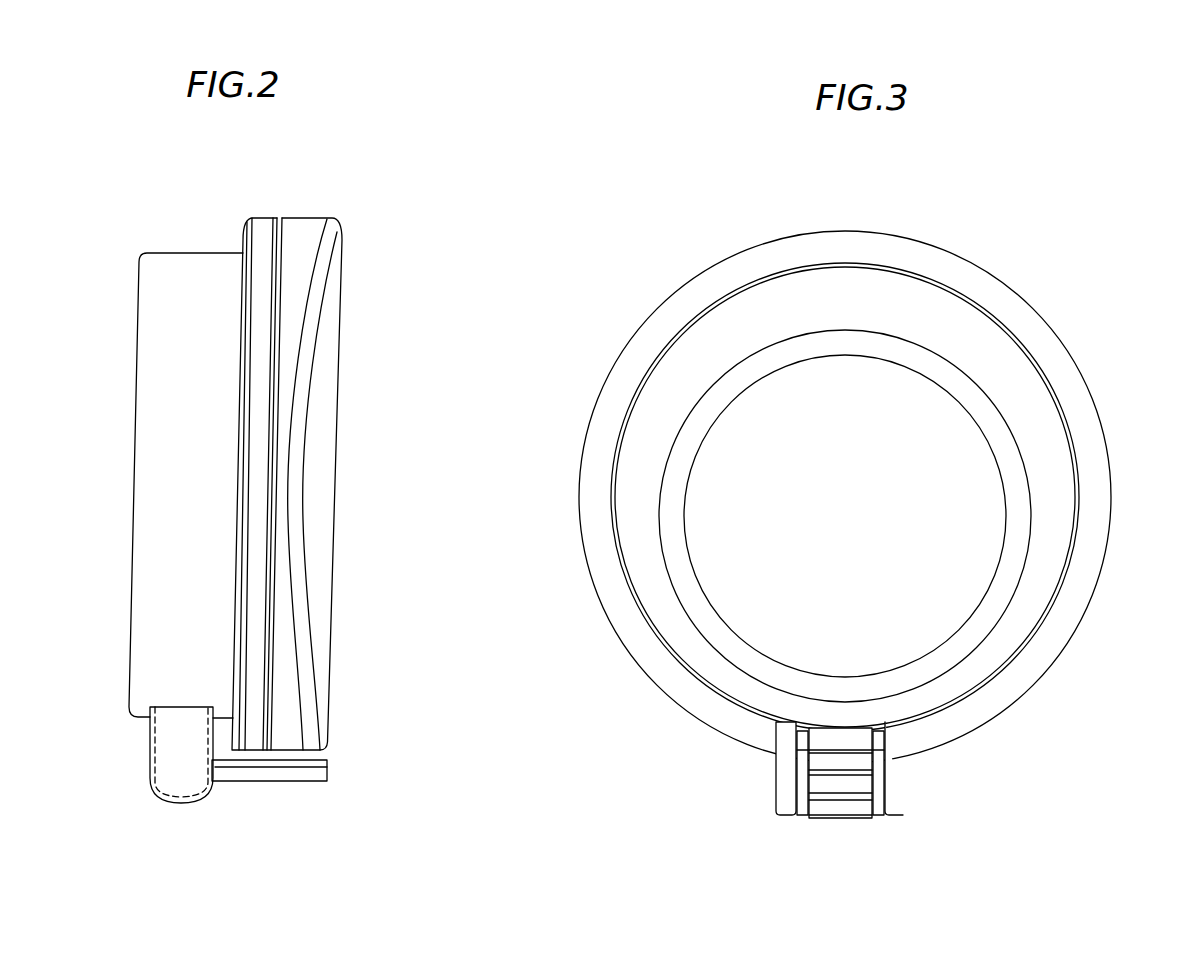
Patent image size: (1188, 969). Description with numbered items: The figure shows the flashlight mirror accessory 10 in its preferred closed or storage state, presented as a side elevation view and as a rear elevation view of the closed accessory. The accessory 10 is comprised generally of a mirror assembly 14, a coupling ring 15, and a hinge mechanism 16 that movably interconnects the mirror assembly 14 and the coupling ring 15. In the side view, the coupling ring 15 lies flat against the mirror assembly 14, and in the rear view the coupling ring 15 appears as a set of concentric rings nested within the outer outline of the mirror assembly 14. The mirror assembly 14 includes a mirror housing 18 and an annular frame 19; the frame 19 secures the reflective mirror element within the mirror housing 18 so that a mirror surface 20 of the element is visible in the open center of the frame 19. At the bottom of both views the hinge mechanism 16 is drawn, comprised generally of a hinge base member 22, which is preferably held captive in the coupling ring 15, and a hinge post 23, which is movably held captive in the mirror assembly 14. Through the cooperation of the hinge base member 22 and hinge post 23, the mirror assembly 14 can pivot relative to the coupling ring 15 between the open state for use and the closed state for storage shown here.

In FIG. 2, the flashlight mirror accessory 10 is at (190, 192).
In FIG. 3, the flashlight mirror accessory 10 is at (722, 227).
In FIG. 2, the mirror assembly 14 is at (298, 200).
In FIG. 3, the mirror assembly 14 is at (903, 250).
In FIG. 2, the coupling ring 15 is at (143, 365).
In FIG. 3, the coupling ring 15 is at (935, 365).
In FIG. 2, the hinge mechanism 16 is at (175, 785).
In FIG. 3, the hinge mechanism 16 is at (765, 788).
In FIG. 2, the mirror housing 18 is at (312, 563).
In FIG. 2, the annular frame 19 is at (263, 343).
In FIG. 3, the annular frame 19 is at (1025, 323).
In FIG. 3, the mirror surface 20 is at (861, 519).
In FIG. 2, the hinge base member 22 is at (148, 765).
In FIG. 3, the hinge base member 22 is at (907, 787).
In FIG. 2, the hinge post 23 is at (307, 773).
In FIG. 3, the hinge post 23 is at (843, 808).